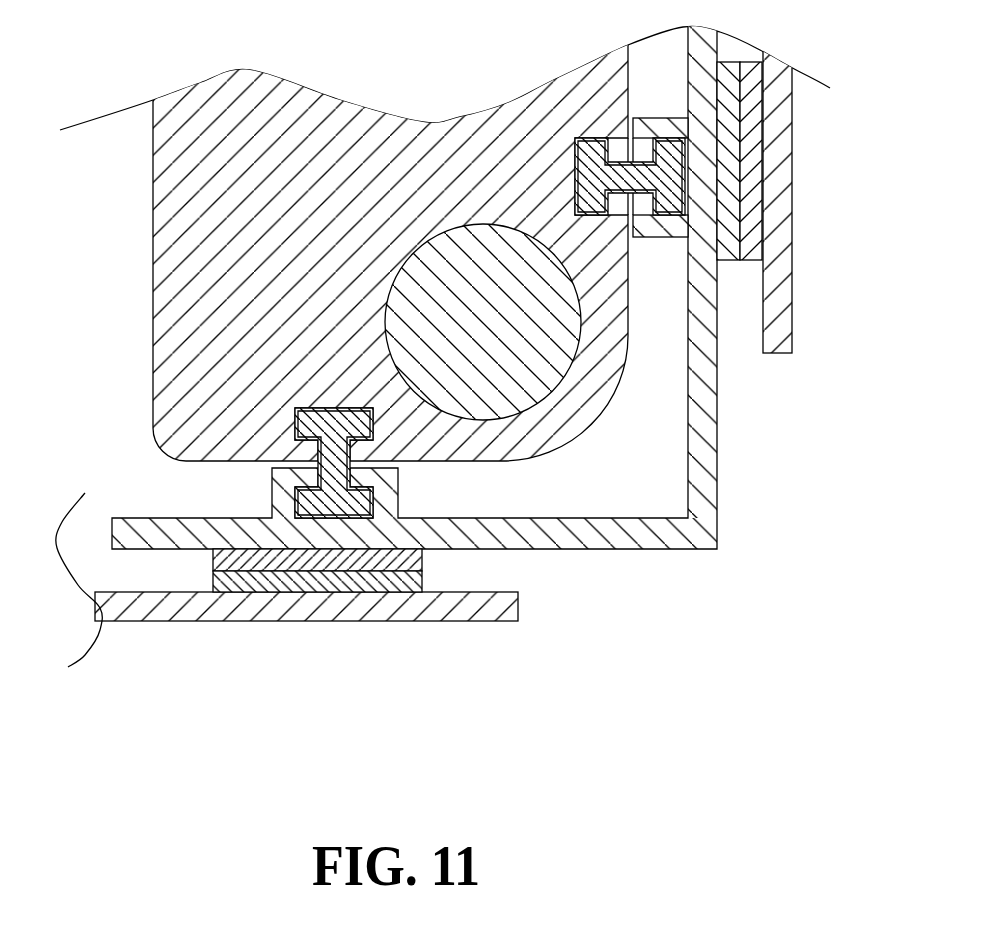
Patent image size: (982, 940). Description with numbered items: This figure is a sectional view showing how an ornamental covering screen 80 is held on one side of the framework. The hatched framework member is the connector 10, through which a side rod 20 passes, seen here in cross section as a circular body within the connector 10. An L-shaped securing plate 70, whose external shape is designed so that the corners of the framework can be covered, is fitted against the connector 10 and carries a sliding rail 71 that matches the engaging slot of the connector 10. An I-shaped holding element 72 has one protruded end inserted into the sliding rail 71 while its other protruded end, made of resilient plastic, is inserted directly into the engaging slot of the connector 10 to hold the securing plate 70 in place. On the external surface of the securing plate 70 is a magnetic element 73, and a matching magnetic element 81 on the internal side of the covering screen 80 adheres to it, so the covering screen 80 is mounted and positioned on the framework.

The connector 10 is at (160, 303).
The side rod 20 is at (538, 388).
The securing plate 70 is at (700, 552).
The sliding rail 71 is at (667, 232).
The holding element 72 is at (592, 135).
The magnetic element 73 is at (730, 262).
The covering screen 80 is at (790, 290).
The magnetic element 81 is at (758, 227).